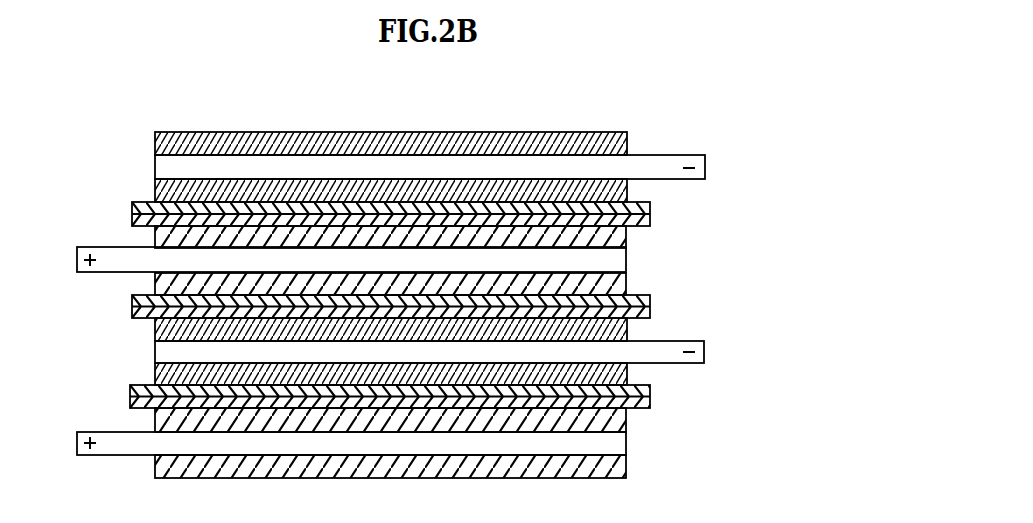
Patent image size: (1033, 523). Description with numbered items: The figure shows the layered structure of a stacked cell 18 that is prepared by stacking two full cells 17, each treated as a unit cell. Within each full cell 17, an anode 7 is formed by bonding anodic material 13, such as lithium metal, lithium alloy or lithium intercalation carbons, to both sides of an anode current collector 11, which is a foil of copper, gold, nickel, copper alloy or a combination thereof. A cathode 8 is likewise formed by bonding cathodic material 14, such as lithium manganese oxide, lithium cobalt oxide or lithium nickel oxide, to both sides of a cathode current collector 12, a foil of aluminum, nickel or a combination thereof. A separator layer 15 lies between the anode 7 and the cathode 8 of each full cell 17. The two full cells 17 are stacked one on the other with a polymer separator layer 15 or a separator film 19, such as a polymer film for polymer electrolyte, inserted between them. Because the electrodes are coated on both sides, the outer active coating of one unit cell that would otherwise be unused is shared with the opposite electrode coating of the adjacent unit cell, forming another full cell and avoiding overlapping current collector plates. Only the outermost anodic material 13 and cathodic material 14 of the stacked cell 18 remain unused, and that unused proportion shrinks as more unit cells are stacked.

The anode 7 is at (772, 117).
The cathode 8 is at (704, 228).
The anode current collector 11 is at (703, 164).
The cathode current collector 12 is at (620, 262).
The anodic material 13 is at (627, 142).
The cathodic material 14 is at (626, 238).
The separator layer 15 is at (650, 212).
The full cell 17 is at (63, 132).
The stacked cell 18 is at (755, 276).
The separator film 19 is at (132, 303).